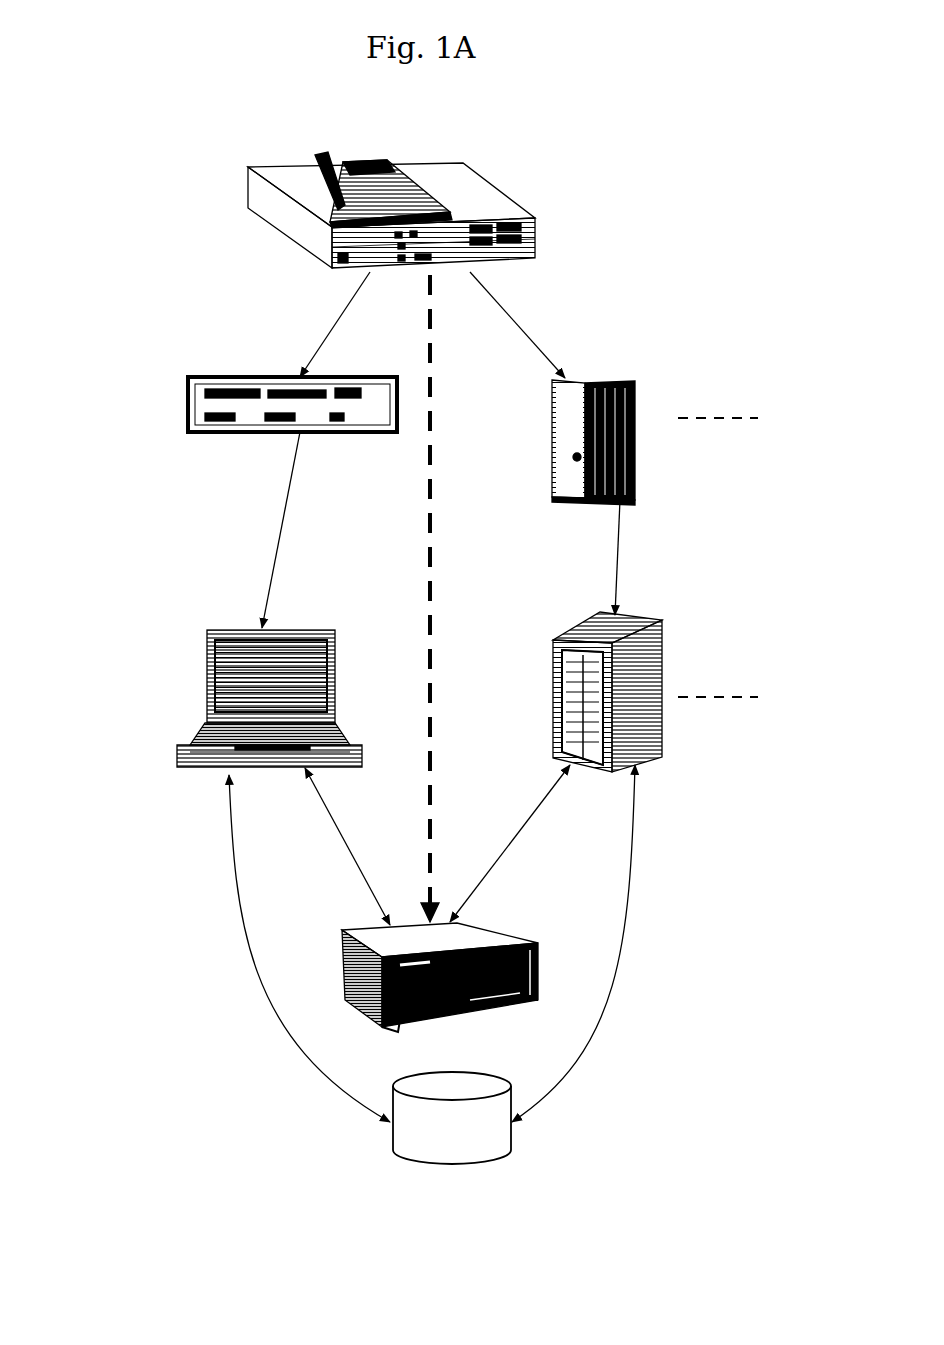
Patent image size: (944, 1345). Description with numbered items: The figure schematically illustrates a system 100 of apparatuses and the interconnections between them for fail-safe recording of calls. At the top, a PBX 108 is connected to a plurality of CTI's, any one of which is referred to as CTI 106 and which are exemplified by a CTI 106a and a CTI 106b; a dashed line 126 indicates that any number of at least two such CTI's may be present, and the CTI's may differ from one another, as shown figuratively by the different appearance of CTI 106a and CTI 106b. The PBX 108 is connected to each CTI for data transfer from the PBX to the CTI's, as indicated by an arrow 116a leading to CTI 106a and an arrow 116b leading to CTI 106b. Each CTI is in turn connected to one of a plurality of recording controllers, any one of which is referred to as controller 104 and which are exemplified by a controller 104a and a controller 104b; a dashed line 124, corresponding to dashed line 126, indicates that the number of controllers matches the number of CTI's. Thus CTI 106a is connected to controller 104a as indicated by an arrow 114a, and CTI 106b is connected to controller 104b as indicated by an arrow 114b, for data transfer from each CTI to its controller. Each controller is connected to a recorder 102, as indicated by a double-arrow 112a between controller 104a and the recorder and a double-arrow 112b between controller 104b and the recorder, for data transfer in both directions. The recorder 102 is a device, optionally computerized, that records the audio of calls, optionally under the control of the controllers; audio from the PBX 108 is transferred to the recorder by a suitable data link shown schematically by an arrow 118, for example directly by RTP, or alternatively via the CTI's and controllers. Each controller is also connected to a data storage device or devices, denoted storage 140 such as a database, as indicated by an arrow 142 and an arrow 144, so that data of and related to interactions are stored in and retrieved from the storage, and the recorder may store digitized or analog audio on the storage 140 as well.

The system 100 is at (173, 218).
The recorder 102 is at (362, 928).
The recording controller 104 is at (163, 670).
The controller 104a is at (212, 630).
The controller 104b is at (583, 630).
The CTI 106 is at (150, 404).
The CTI 106a is at (190, 376).
The CTI 106b is at (606, 378).
The PBX 108 is at (536, 196).
The double-arrow 112a is at (345, 844).
The double-arrow 112b is at (506, 850).
The arrow 114a is at (285, 511).
The arrow 114b is at (620, 545).
The arrow 116a is at (333, 314).
The arrow 116b is at (512, 312).
The arrow 118 is at (435, 538).
The dashed line 124 is at (720, 696).
The dashed line 126 is at (722, 417).
The storage 140 is at (397, 1080).
The arrow 142 is at (235, 895).
The arrow 144 is at (630, 885).